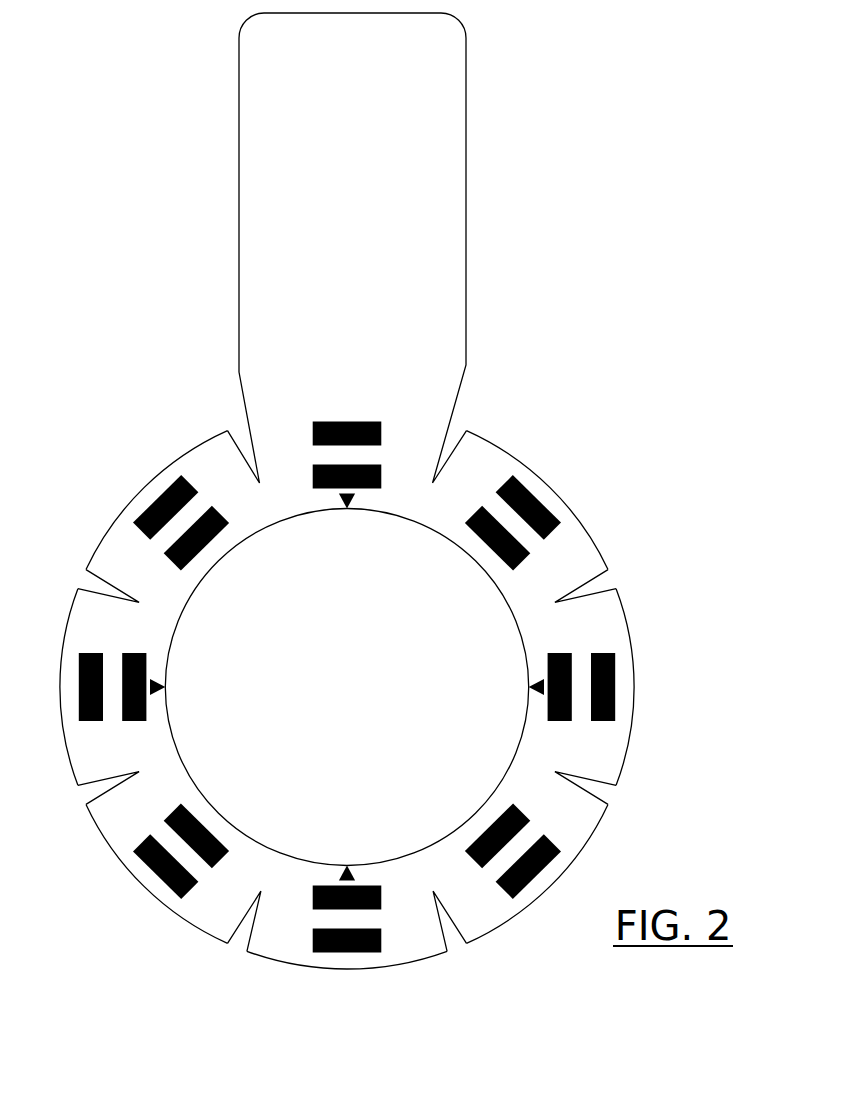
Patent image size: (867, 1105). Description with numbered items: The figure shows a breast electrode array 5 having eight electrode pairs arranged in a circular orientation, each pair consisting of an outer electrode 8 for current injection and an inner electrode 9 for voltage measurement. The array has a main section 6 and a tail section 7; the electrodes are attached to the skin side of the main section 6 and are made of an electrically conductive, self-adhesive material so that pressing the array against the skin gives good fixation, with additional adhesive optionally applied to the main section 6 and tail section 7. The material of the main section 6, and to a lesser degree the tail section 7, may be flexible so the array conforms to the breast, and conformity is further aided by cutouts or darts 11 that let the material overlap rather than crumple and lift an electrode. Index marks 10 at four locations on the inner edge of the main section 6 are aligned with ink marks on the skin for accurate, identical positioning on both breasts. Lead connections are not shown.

The breast electrode array 5 is at (547, 409).
The main section 6 is at (588, 545).
The tail section 7 is at (443, 242).
The outer electrode 8 is at (613, 678).
The inner electrode 9 is at (570, 713).
The index marks 10 is at (528, 690).
The cutouts or darts 11 is at (610, 795).